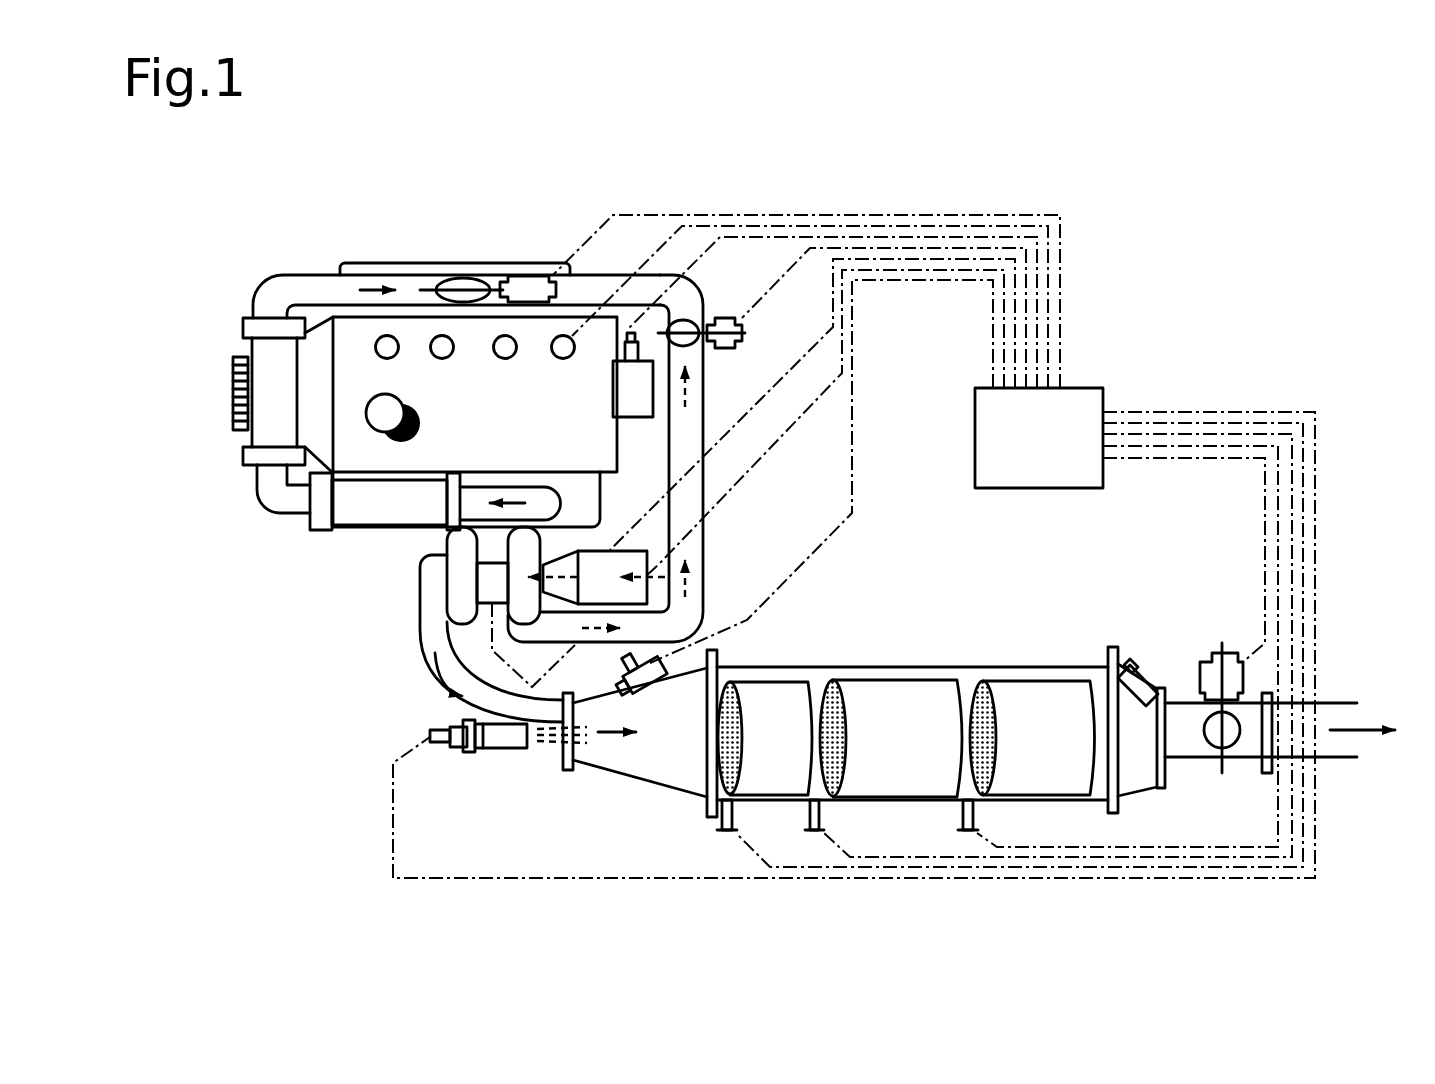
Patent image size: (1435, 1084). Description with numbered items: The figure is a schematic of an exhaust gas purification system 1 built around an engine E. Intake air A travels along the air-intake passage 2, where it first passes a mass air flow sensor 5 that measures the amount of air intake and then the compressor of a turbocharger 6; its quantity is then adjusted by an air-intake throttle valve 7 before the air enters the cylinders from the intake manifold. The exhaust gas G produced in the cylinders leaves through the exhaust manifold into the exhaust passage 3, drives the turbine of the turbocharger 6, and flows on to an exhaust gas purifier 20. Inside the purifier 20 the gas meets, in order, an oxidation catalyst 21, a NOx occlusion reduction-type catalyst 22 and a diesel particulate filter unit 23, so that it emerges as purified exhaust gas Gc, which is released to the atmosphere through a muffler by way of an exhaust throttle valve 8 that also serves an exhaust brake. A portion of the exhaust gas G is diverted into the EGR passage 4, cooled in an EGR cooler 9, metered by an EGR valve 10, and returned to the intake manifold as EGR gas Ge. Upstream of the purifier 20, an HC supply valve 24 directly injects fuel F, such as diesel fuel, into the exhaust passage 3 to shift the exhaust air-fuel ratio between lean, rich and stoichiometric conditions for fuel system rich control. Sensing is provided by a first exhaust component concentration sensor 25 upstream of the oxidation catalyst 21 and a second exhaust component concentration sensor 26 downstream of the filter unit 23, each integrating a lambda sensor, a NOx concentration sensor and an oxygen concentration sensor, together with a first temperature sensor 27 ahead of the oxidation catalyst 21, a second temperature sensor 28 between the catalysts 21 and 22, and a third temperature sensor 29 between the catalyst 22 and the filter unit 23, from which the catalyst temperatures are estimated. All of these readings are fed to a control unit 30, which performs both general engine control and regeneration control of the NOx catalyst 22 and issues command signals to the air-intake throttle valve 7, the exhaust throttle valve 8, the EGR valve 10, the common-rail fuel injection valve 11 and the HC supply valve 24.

The exhaust gas purification system 1 is at (1107, 277).
The air-intake passage 2 is at (664, 388).
The exhaust passage 3 is at (444, 654).
The EGR passage 4 is at (456, 221).
The mass air flow sensor 5 is at (640, 560).
The turbocharger 6 is at (487, 578).
The air-intake throttle valve 7 is at (735, 318).
The exhaust throttle valve 8 is at (1205, 662).
The EGR cooler 9 is at (262, 410).
The EGR valve 10 is at (525, 277).
The fuel injection valve 11 is at (574, 334).
The exhaust gas purifier 20 is at (1004, 745).
The oxidation catalyst 21 is at (775, 698).
The NOx occlusion reduction-type catalyst 22 is at (870, 698).
The diesel particulate filter unit 23 is at (1018, 690).
The HC supply valve 24 is at (508, 789).
The first exhaust component concentration sensor 25 is at (643, 698).
The second exhaust component concentration sensor 26 is at (1157, 663).
The first temperature sensor 27 is at (717, 833).
The second temperature sensor 28 is at (812, 833).
The third temperature sensor 29 is at (965, 833).
The control unit 30 is at (854, 546).
The engine E is at (431, 363).
The air A is at (688, 580).
The exhaust gas G is at (425, 678).
The EGR gas Ge is at (390, 265).
The purified exhaust gas Gc is at (1382, 734).
The fuel F is at (543, 753).